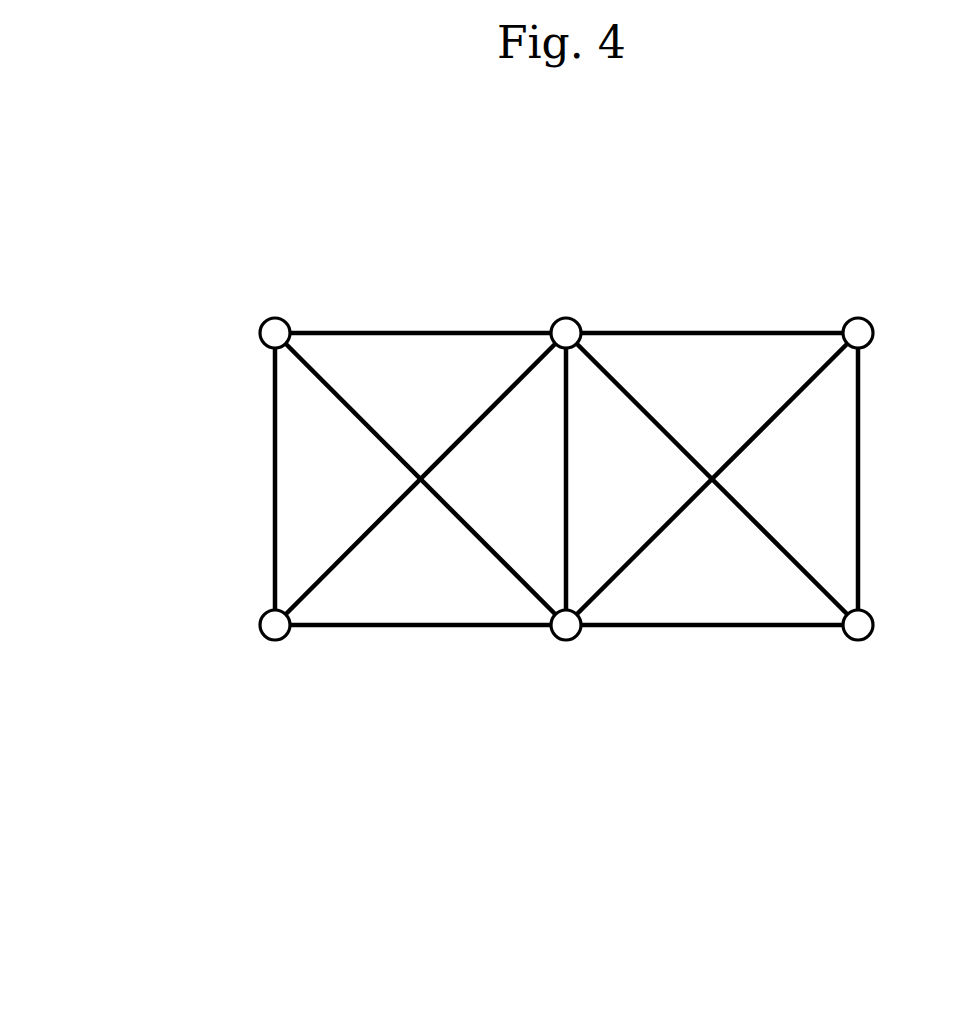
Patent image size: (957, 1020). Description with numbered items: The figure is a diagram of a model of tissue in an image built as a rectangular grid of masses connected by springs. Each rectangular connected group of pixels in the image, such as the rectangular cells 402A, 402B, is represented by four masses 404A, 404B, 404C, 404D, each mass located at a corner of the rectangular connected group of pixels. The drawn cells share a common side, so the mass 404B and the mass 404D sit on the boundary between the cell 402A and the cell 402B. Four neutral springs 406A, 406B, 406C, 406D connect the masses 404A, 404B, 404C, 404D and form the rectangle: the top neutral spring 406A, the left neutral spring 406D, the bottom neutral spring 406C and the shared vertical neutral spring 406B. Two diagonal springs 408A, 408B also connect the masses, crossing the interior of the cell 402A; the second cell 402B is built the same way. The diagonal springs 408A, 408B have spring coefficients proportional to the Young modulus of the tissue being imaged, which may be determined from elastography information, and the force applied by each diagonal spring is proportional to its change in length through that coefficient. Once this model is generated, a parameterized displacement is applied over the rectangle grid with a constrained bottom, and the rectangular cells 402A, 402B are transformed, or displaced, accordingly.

The rectangular connected group of pixels 402A is at (497, 372).
The rectangular connected group of pixels 402B is at (751, 415).
The mass 404A is at (358, 255).
The mass 404B is at (649, 255).
The mass 404C is at (204, 674).
The mass 404D is at (628, 670).
The neutral spring 406A is at (420, 293).
The neutral spring 406B is at (722, 513).
The neutral spring 406C is at (453, 713).
The neutral spring 406D is at (198, 479).
The diagonal spring 408A is at (316, 479).
The diagonal spring 408B is at (388, 552).